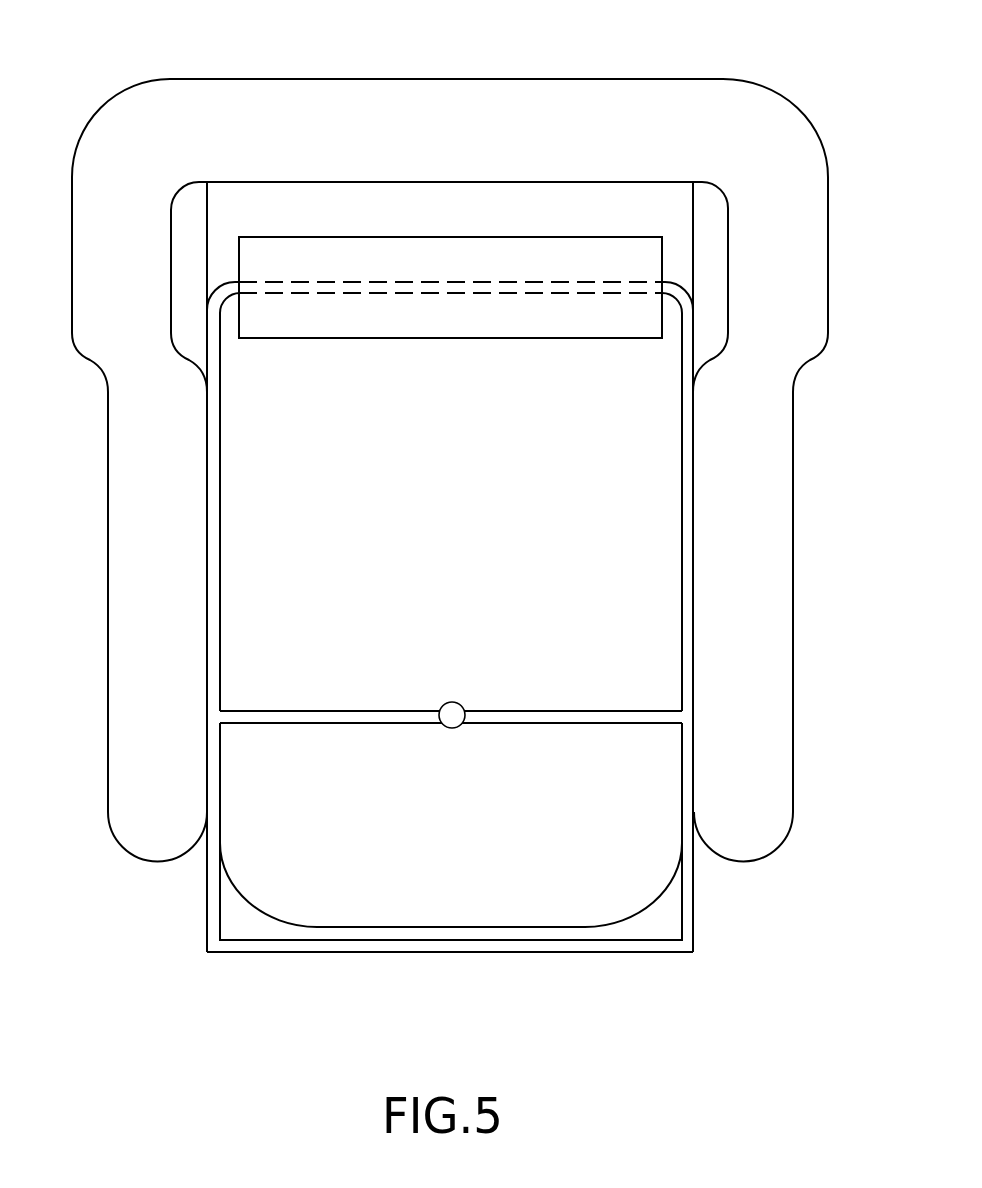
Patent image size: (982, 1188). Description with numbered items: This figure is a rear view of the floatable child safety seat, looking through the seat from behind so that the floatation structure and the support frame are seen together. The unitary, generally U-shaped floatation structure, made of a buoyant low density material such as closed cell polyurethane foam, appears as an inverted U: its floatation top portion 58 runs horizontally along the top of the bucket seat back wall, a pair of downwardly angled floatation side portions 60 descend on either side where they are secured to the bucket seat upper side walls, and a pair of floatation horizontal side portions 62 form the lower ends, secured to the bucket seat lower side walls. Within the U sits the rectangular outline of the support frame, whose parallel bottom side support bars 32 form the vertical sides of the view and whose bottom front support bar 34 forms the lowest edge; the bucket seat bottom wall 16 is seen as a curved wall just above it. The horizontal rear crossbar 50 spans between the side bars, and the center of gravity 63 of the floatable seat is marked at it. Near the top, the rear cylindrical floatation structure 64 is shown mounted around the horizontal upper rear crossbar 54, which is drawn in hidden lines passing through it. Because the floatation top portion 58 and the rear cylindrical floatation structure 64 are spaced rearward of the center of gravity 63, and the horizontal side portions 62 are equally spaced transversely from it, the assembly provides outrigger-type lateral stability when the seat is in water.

The floatation top portion 58 is at (417, 95).
The downwardly angled floatation side portions 60 is at (130, 680).
The floatation horizontal side portions 62 is at (125, 827).
The bottom side support bars 32 is at (217, 518).
The bottom front support bar 34 is at (545, 948).
The horizontal rear crossbar 50 is at (493, 718).
The center of gravity 63 is at (447, 727).
The bucket seat bottom wall 16 is at (350, 912).
The rear cylindrical floatation structure 64 is at (430, 257).
The horizontal upper rear crossbar 54 is at (477, 287).